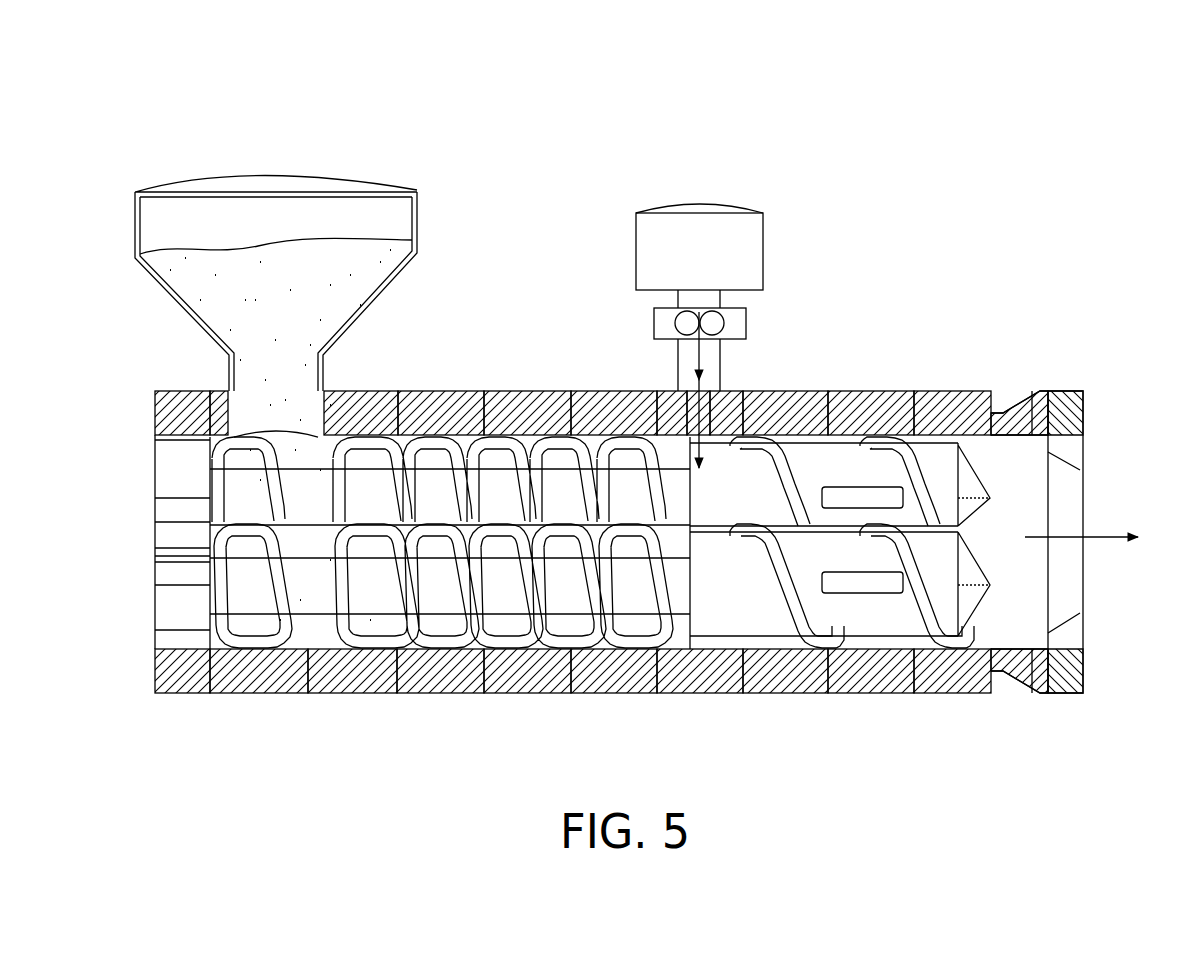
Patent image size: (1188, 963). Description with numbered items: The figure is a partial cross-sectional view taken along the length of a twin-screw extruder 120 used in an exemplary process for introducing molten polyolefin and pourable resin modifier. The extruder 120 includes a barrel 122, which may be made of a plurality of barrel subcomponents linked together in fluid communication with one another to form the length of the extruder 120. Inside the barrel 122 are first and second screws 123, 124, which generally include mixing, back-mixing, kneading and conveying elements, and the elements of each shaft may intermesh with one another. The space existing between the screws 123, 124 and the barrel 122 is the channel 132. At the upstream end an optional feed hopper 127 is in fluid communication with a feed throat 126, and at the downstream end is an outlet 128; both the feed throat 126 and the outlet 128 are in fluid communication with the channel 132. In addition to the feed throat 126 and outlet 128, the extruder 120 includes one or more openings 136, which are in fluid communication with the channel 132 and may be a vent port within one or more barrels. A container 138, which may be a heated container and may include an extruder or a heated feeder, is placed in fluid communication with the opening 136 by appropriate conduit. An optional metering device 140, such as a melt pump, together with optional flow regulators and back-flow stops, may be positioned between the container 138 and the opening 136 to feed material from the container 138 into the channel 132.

The twin-screw extruder 120 is at (854, 106).
The barrel 122 is at (478, 390).
The first screw 123 is at (228, 488).
The second screw 124 is at (226, 588).
The feed throat 126 is at (287, 410).
The feed hopper 127 is at (417, 218).
The outlet 128 is at (1070, 500).
The channel 132 is at (590, 436).
The opening 136 is at (703, 390).
The container 138 is at (763, 262).
The metering device 140 is at (746, 324).